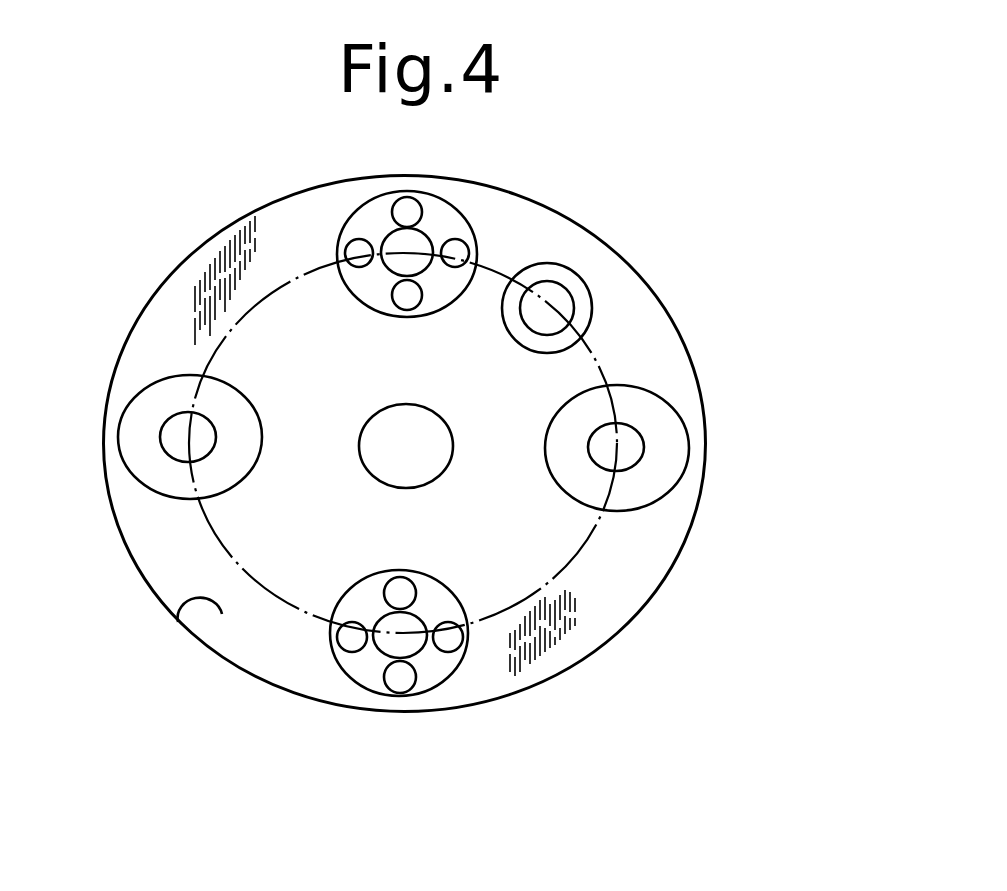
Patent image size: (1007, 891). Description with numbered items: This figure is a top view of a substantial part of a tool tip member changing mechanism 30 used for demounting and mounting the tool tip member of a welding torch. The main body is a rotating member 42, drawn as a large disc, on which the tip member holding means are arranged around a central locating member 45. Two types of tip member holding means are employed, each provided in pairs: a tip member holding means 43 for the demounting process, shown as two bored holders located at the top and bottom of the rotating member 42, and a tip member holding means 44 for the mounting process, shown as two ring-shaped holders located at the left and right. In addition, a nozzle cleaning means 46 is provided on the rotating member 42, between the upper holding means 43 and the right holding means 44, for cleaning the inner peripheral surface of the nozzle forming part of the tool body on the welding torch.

The tool tip member changing mechanism 30 is at (757, 200).
The rotating member 42 is at (613, 582).
The tip member holding means for the demounting process 43 is at (452, 198).
The tip member holding means for the mounting process 44 is at (135, 483).
The locating member 45 is at (403, 445).
The nozzle cleaning means 46 is at (583, 280).